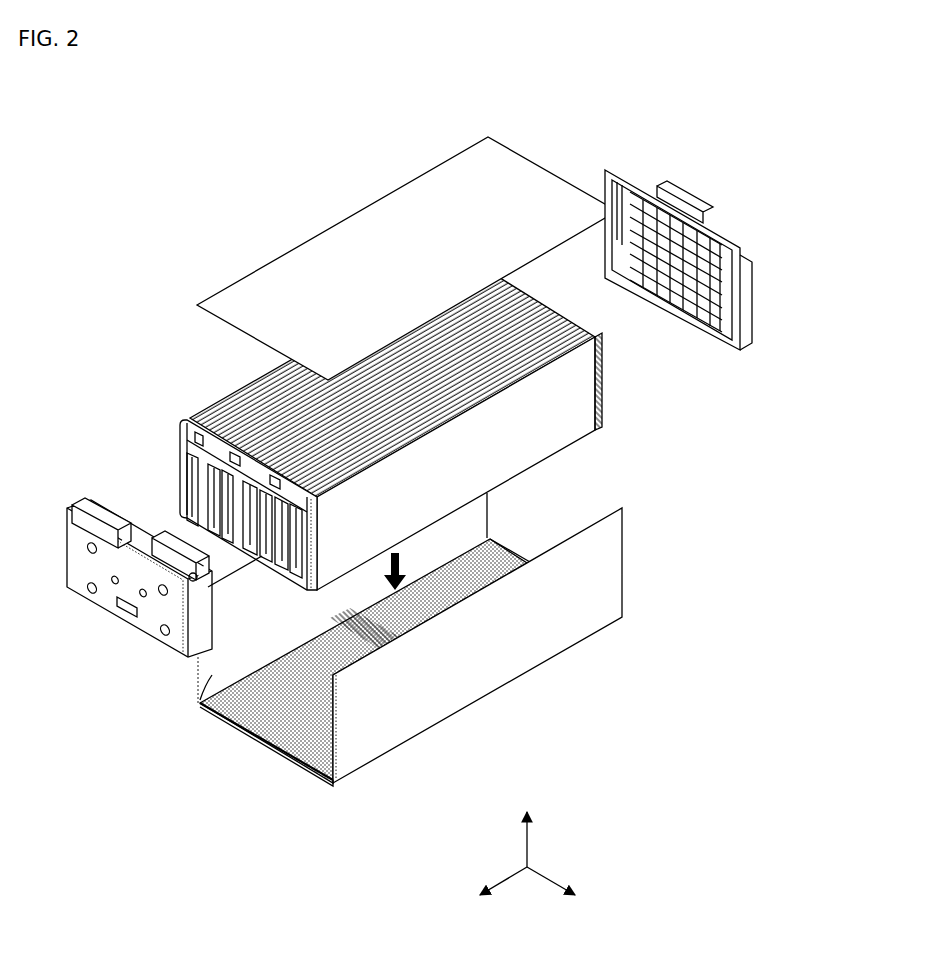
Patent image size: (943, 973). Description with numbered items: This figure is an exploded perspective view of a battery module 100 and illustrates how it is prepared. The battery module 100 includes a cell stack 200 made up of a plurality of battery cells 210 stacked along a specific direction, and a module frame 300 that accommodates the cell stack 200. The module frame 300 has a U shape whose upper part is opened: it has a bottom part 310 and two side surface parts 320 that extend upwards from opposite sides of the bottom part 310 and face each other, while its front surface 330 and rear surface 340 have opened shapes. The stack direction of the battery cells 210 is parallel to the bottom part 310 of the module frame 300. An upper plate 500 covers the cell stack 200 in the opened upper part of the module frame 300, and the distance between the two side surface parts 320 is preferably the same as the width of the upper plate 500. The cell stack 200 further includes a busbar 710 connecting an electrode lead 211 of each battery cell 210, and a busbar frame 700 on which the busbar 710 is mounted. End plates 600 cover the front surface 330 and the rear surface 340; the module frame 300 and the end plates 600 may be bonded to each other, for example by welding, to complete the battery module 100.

The battery module 100 is at (153, 133).
The cell stack 200 is at (258, 418).
The battery cell 210 is at (573, 421).
The electrode lead 211 is at (300, 557).
The module frame 300 is at (95, 692).
The bottom part 310 is at (250, 735).
The side surface part 320 is at (197, 703).
The front surface 330 is at (276, 775).
The rear surface 340 is at (550, 527).
The upper plate 500 is at (352, 245).
The end plate 600 is at (630, 180).
The busbar frame 700 is at (604, 373).
The busbar 710 is at (220, 468).